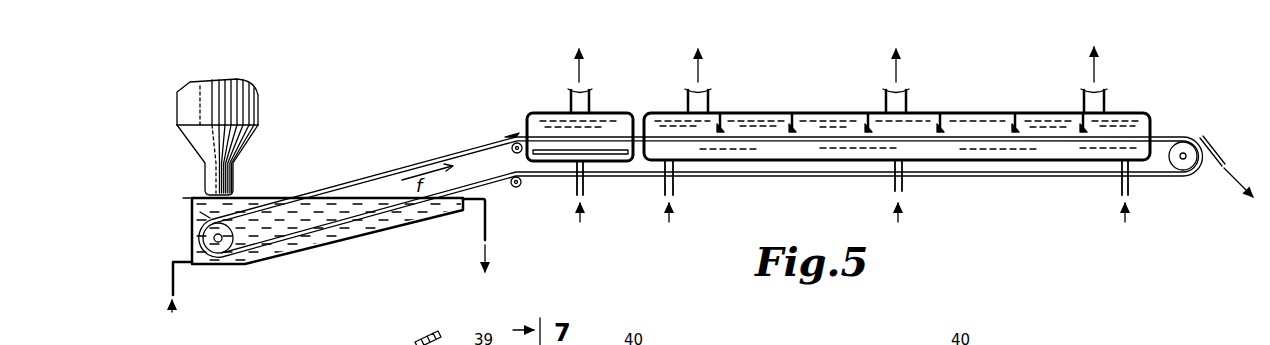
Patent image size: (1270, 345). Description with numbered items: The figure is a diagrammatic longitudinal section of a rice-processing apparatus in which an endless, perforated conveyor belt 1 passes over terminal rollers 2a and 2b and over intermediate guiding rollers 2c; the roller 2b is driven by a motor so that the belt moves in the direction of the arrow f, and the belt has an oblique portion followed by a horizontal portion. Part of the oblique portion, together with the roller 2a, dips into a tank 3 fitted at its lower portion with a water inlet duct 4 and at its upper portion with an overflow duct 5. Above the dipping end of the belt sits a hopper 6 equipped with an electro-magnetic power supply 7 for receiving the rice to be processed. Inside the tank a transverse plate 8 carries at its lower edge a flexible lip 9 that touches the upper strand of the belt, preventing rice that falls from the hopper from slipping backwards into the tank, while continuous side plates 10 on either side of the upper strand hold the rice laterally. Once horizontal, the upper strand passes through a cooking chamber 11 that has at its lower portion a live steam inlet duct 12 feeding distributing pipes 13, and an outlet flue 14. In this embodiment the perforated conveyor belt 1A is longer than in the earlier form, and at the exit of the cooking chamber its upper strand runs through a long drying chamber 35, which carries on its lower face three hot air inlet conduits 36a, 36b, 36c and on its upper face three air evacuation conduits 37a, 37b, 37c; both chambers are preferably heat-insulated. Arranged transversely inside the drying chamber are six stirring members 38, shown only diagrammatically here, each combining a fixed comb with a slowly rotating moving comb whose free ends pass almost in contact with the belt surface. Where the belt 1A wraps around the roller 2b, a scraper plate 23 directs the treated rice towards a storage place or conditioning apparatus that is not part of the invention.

The endless conveyor belt 1 is at (1018, 138).
The perforated conveyor belt 1A is at (372, 213).
The terminal roller 2a is at (222, 247).
The terminal roller 2b is at (1185, 169).
The intermediate guiding roller 2c is at (512, 152).
The tank 3 is at (305, 253).
The water inlet duct 4 is at (170, 263).
The overflow duct 5 is at (482, 226).
The hopper 6 is at (258, 97).
The electro-magnetic power supply 7 is at (248, 141).
The transverse plate 8 is at (203, 217).
The flexible lip 9 is at (205, 219).
The side plates 10 is at (414, 160).
The cooking chamber 11 is at (598, 113).
The steam inlet duct 12 is at (585, 190).
The distributing pipes 13 is at (562, 156).
The outlet flue 14 is at (570, 100).
The scraper plate 23 is at (1213, 150).
The drying chamber 35 is at (818, 113).
The hot air inlet conduit 36a is at (674, 192).
The hot air inlet conduit 36b is at (894, 190).
The hot air inlet conduit 36c is at (1122, 186).
The air evacuation conduit 37a is at (688, 98).
The air evacuation conduit 37b is at (886, 94).
The air evacuation conduit 37c is at (1085, 94).
The stirring members 38 is at (790, 123).